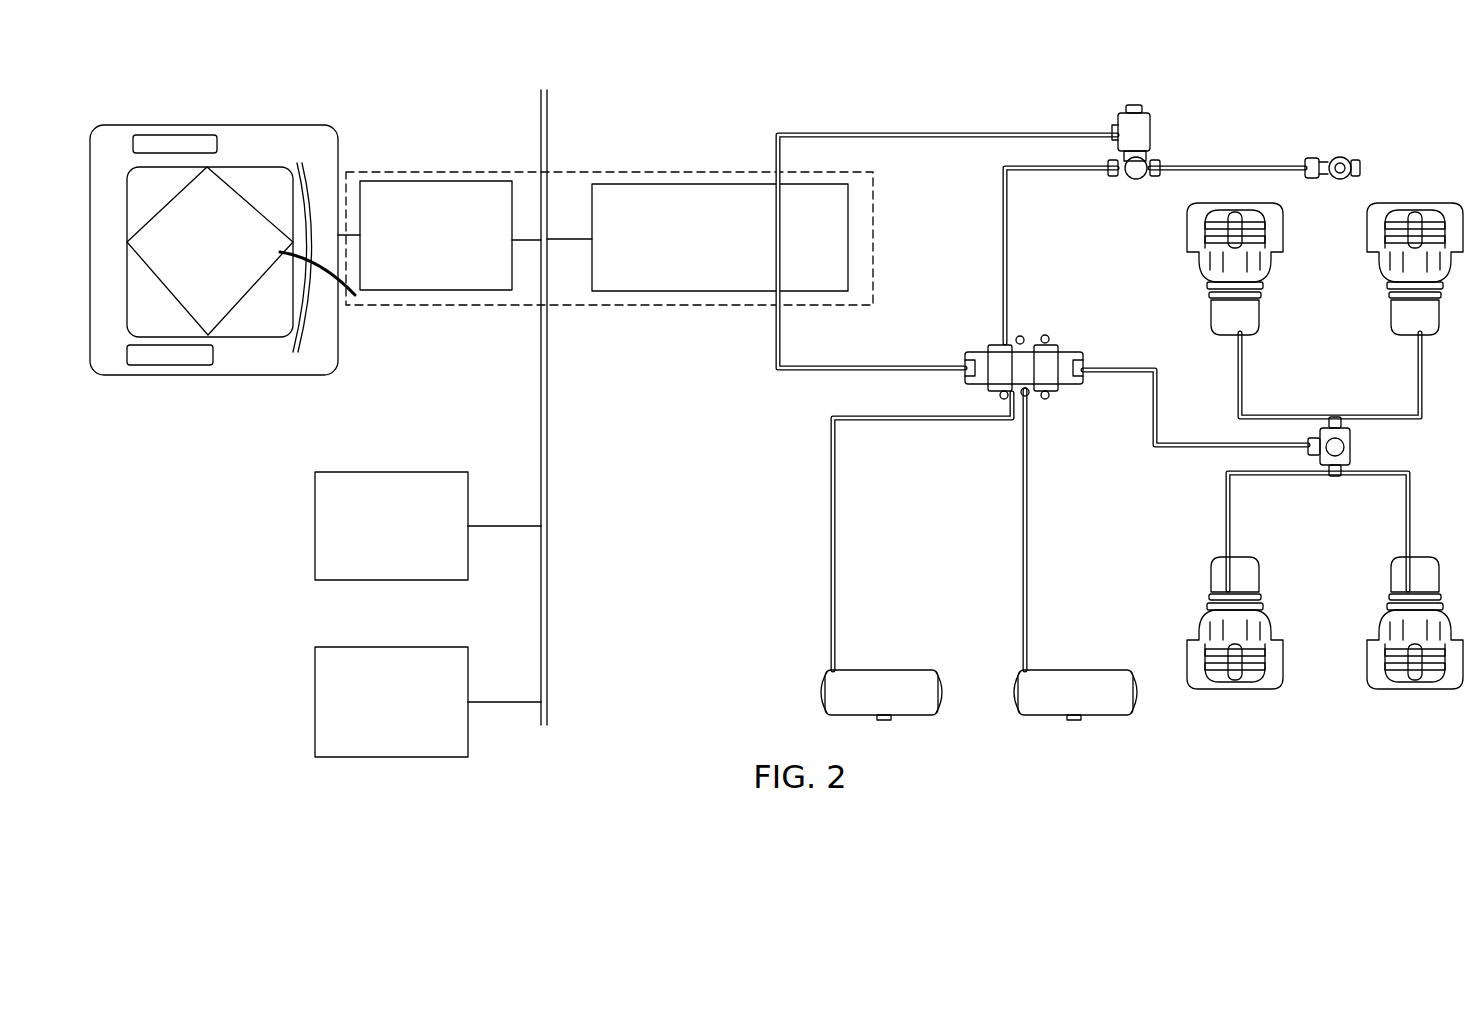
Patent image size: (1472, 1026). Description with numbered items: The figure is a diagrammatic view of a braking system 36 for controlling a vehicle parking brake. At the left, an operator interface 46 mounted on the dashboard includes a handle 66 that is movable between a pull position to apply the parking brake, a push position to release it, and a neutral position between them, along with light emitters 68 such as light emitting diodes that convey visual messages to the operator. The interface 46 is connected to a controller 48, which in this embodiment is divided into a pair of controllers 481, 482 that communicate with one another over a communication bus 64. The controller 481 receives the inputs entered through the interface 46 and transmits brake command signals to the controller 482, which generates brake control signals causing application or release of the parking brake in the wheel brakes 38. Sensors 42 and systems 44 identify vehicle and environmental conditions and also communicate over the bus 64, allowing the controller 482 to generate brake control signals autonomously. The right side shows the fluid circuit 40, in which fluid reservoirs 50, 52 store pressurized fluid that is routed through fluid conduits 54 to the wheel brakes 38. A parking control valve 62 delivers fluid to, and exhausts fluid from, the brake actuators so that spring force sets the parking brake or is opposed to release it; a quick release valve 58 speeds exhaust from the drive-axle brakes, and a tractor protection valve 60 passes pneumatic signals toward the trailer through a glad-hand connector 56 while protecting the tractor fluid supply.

The braking system 36 is at (690, 134).
The wheel brakes 38 is at (1270, 672).
The fluid circuit 40 is at (1224, 134).
The sensors 42 is at (332, 525).
The systems 44 is at (337, 700).
The operator interface 46 is at (241, 216).
The controller 48 is at (609, 234).
The first controller 481 is at (450, 278).
The second controller 482 is at (688, 280).
The fluid reservoir 50 is at (917, 707).
The fluid reservoir 52 is at (1113, 705).
The fluid conduits 54 is at (1158, 443).
The glad-hand connector 56 is at (1355, 162).
The quick release valve 58 is at (1336, 443).
The tractor protection valve 60 is at (1132, 125).
The parking control valve 62 is at (1058, 352).
The communication bus 64 is at (547, 420).
The handle 66 is at (257, 192).
The light emitters 68 is at (188, 143).